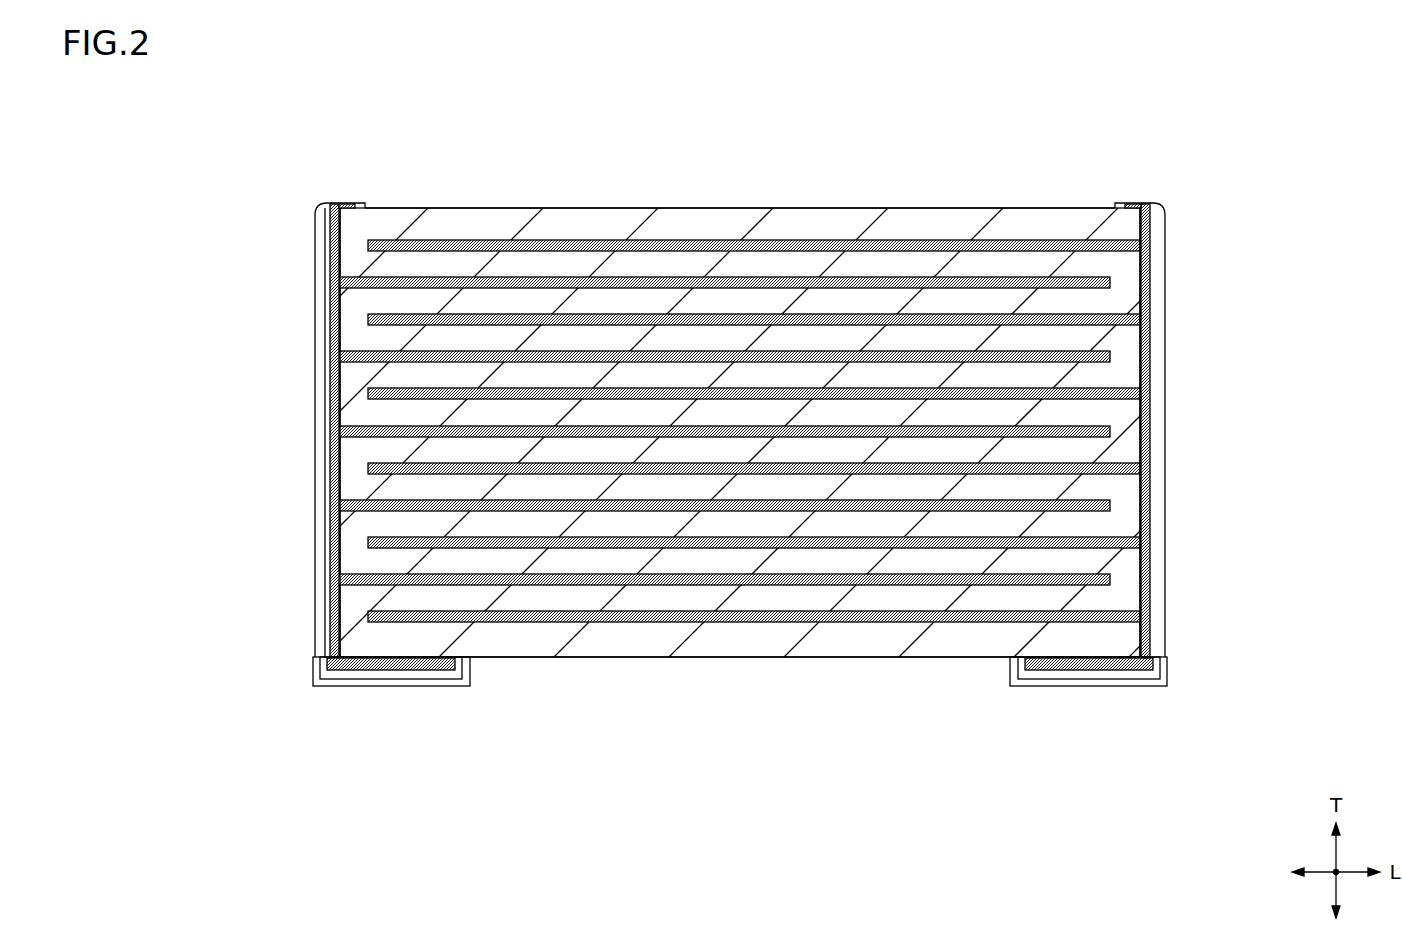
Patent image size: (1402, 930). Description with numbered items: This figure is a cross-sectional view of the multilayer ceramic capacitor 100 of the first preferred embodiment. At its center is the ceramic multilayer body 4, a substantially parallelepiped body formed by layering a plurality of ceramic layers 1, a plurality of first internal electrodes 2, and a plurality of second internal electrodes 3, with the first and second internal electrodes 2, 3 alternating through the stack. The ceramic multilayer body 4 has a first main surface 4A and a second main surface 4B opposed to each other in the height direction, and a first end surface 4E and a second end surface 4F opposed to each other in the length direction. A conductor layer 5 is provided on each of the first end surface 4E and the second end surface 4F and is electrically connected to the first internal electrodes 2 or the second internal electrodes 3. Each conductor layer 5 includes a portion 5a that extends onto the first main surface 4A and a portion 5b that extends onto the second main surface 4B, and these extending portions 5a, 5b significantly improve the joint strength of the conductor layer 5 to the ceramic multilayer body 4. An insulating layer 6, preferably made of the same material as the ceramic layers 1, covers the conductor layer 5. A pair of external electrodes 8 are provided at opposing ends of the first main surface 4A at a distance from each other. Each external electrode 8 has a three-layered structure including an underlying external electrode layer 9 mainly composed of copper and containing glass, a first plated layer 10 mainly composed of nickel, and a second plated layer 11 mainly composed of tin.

The multilayer ceramic capacitor 100 is at (186, 92).
The ceramic layer 1 is at (1128, 640).
The first internal electrode 2 is at (345, 576).
The second internal electrode 3 is at (405, 611).
The ceramic multilayer body 4 is at (945, 228).
The first main surface 4A is at (740, 659).
The second main surface 4B is at (745, 208).
The first end surface 4E is at (334, 383).
The second end surface 4F is at (1150, 380).
The conductor layer 5 is at (747, 459).
The extending portion 5a is at (1140, 688).
The extending portion 5b is at (1140, 203).
The insulating layer 6 is at (1153, 408).
The external electrode 8 is at (740, 748).
The underlying external electrode layer 9 is at (1040, 688).
The first plated layer 10 is at (1080, 688).
The second plated layer 11 is at (1108, 688).